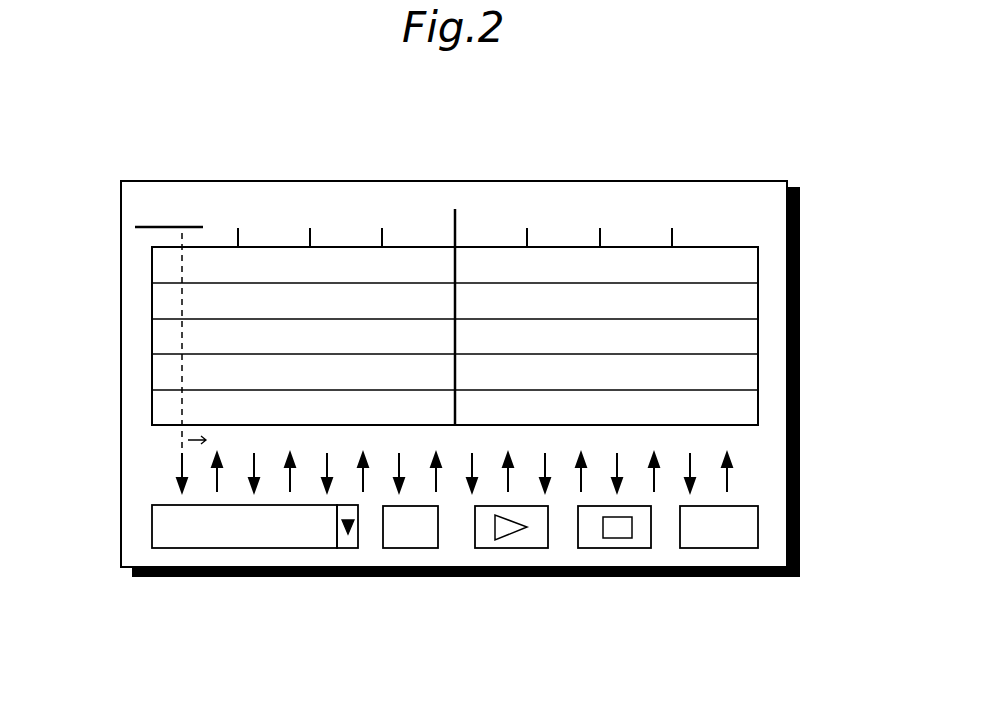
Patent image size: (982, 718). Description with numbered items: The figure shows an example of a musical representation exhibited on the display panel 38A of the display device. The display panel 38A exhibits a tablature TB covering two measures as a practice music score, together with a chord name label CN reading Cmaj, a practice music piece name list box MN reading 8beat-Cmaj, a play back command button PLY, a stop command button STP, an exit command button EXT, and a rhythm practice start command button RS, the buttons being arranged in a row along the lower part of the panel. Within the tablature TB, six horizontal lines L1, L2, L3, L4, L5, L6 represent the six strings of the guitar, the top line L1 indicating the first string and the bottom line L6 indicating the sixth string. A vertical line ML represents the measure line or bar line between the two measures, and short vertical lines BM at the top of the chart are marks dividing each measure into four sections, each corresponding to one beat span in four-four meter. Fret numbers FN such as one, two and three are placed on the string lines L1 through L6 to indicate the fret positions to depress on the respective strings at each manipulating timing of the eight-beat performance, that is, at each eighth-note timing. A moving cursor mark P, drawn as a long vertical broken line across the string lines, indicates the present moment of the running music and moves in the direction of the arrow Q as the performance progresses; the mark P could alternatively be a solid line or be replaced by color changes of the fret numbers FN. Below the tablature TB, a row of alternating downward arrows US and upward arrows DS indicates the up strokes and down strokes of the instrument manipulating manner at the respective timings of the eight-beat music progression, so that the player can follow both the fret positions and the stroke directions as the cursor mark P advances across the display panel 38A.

The display panel 38A is at (497, 180).
The tablature TB is at (406, 205).
The first string line L1 is at (752, 247).
The second string line L2 is at (720, 283).
The third string line L3 is at (720, 319).
The fourth string line L4 is at (720, 354).
The fifth string line L5 is at (720, 390).
The sixth string line L6 is at (735, 425).
The fret numbers FN is at (178, 390).
The chord name label CN is at (136, 227).
The beat marks BM is at (382, 228).
The measure line ML is at (456, 225).
The moving cursor mark P is at (185, 440).
The arrow indicating cursor movement direction Q is at (207, 441).
The upward arrows for down strokes DS is at (215, 485).
The downward arrows for up strokes US is at (180, 465).
The practice music piece name list box MN is at (245, 550).
The rhythm practice start command button RS is at (413, 548).
The play back command button PLY is at (523, 548).
The stop command button STP is at (636, 548).
The exit command button EXT is at (755, 527).